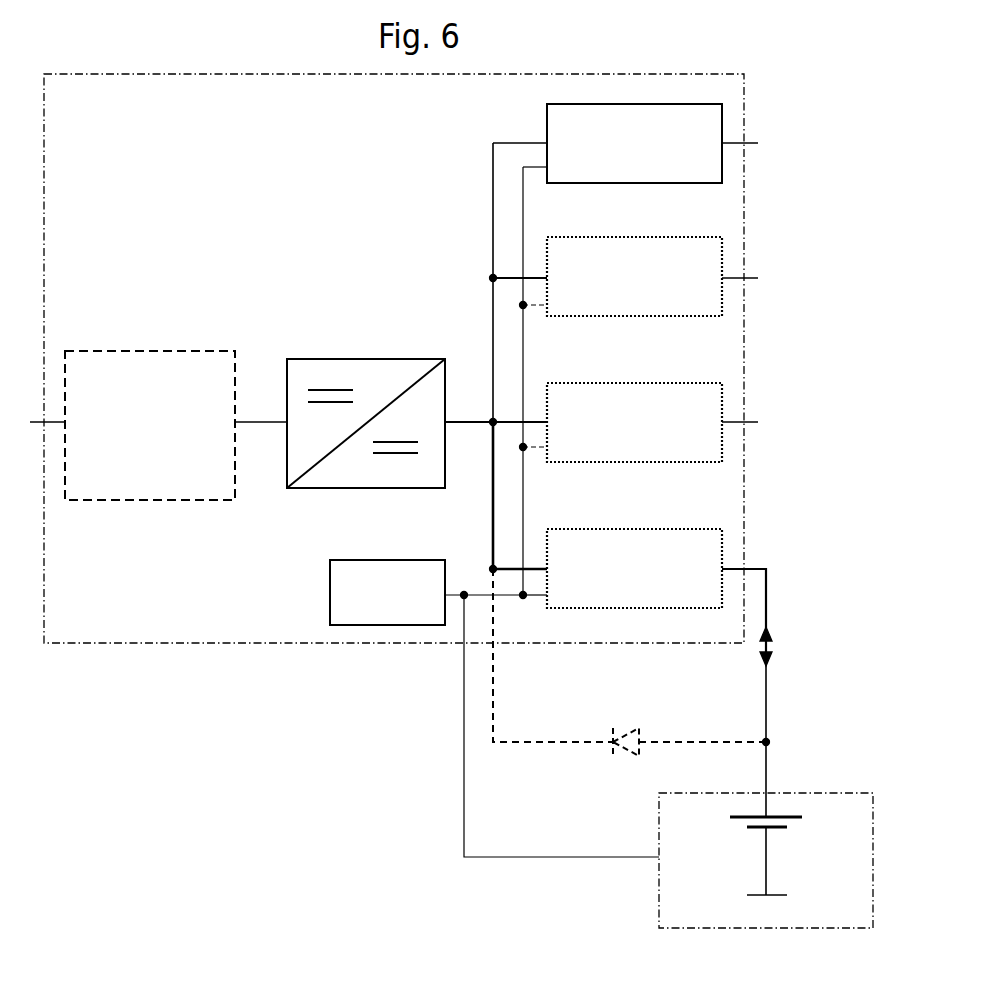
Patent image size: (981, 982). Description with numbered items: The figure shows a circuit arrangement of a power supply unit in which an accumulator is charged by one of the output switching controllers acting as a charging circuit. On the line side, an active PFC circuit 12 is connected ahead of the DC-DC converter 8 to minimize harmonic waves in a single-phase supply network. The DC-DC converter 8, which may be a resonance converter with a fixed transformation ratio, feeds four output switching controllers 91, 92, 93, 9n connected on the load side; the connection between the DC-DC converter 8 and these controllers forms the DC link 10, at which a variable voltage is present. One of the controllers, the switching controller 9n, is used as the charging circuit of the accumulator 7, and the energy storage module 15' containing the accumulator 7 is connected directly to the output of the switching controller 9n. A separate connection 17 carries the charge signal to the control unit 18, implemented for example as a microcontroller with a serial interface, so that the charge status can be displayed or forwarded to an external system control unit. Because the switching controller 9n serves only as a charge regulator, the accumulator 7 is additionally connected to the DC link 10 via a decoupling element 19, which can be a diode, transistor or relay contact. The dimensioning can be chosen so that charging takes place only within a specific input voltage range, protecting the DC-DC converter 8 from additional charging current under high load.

The active PFC circuit 12 is at (156, 351).
The DC-DC converter 8 is at (363, 359).
The DC link 10 is at (493, 477).
The control unit 18 is at (330, 588).
The output switching controller 91 is at (722, 128).
The output switching controller 92 is at (722, 257).
The output switching controller 93 is at (722, 402).
The output switching controller 9n is at (722, 550).
The connection 17 is at (464, 778).
The decoupling element 19 is at (628, 752).
The energy storage module 15' is at (766, 821).
The accumulator 7 is at (778, 828).